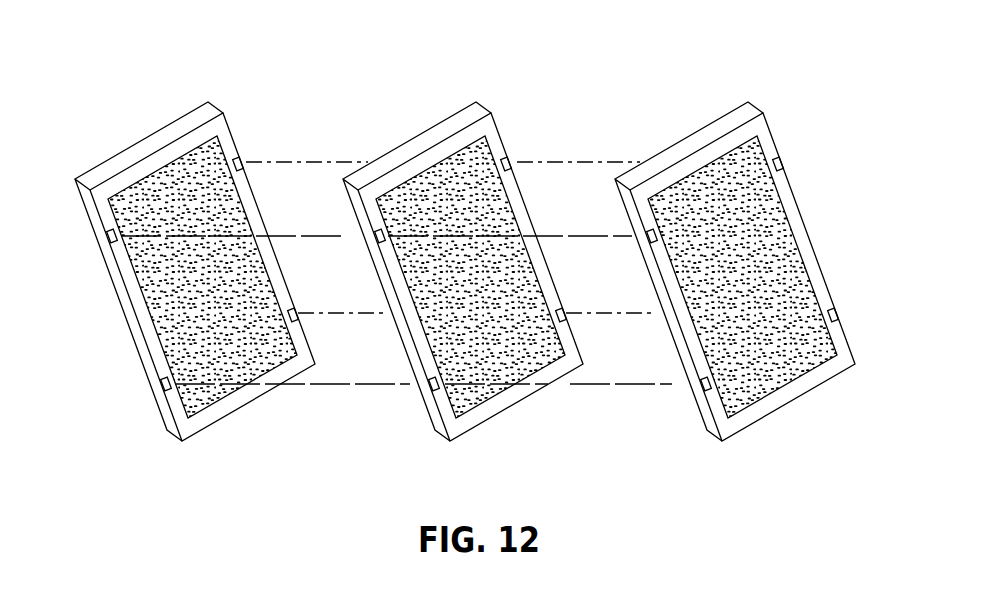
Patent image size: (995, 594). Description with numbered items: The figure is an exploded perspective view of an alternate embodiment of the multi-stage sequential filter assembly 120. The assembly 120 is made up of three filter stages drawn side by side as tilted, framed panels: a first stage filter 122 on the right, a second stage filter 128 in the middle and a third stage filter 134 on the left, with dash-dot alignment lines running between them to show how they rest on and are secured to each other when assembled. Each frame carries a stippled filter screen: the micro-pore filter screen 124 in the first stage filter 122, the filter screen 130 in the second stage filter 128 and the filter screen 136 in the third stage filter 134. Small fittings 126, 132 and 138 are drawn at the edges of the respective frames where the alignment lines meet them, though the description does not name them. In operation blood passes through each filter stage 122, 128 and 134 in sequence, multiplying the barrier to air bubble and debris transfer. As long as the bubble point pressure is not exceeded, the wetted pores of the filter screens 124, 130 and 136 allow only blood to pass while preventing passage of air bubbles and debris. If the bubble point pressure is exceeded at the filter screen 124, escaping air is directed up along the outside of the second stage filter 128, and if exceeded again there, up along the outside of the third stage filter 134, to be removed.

The multi-stage sequential filter assembly 120 is at (518, 70).
The first stage filter 122 is at (763, 422).
The filter screen 124 is at (737, 242).
The first frame clips 126 is at (702, 387).
The second stage filter 128 is at (513, 408).
The filter screen 130 is at (467, 188).
The second frame clips 132 is at (430, 389).
The third stage filter 134 is at (247, 405).
The filter screen 136 is at (203, 187).
The third frame clips 138 is at (111, 240).